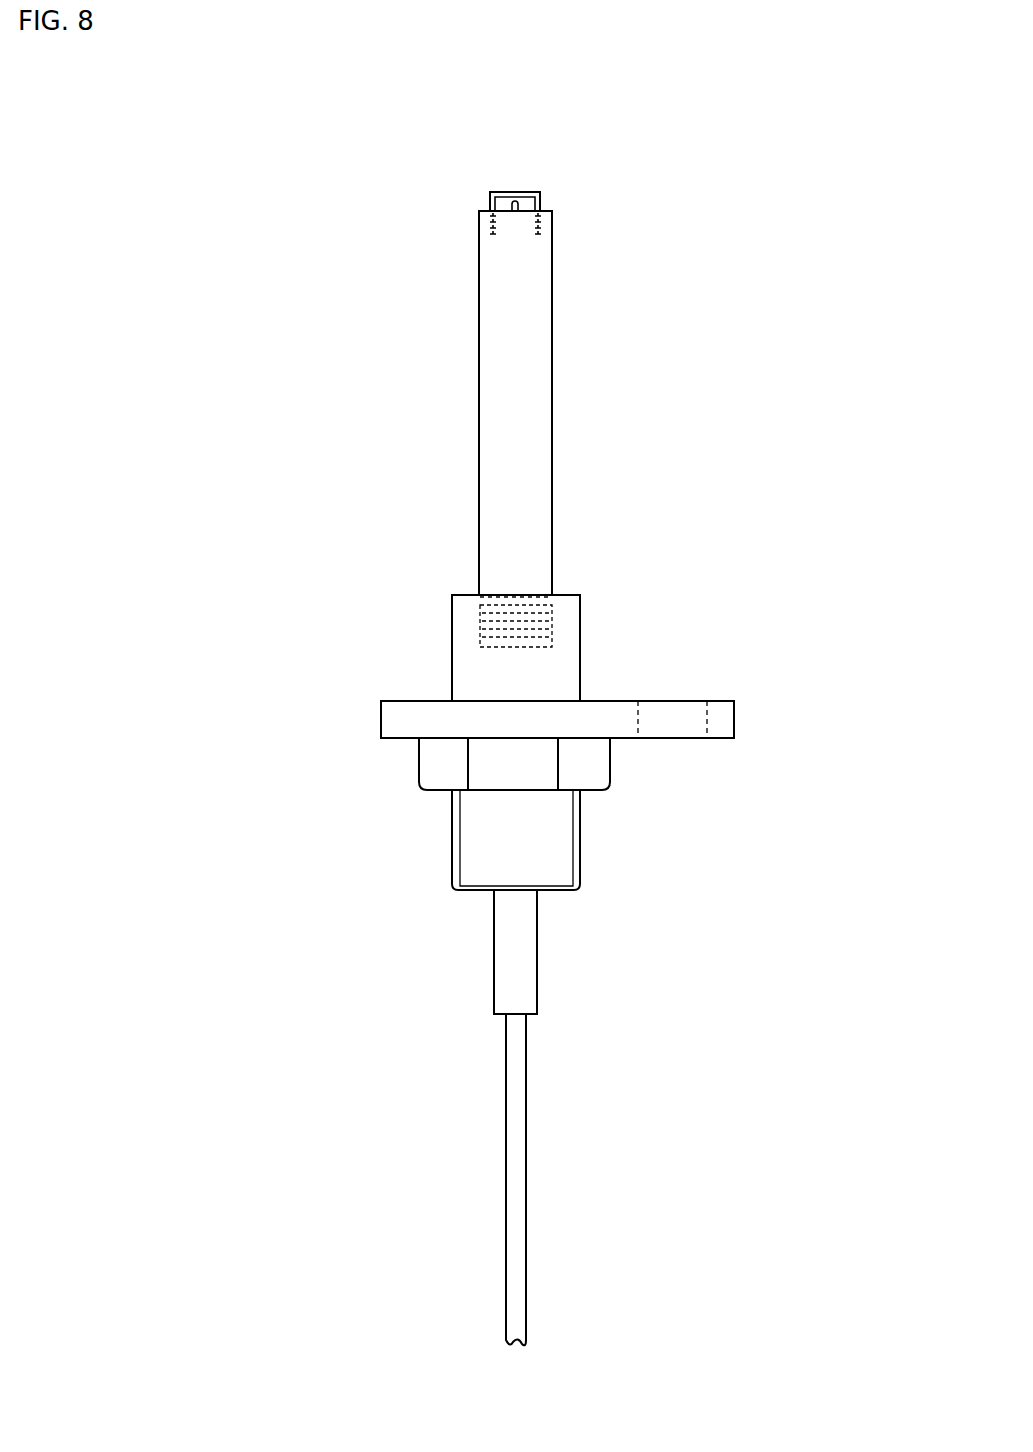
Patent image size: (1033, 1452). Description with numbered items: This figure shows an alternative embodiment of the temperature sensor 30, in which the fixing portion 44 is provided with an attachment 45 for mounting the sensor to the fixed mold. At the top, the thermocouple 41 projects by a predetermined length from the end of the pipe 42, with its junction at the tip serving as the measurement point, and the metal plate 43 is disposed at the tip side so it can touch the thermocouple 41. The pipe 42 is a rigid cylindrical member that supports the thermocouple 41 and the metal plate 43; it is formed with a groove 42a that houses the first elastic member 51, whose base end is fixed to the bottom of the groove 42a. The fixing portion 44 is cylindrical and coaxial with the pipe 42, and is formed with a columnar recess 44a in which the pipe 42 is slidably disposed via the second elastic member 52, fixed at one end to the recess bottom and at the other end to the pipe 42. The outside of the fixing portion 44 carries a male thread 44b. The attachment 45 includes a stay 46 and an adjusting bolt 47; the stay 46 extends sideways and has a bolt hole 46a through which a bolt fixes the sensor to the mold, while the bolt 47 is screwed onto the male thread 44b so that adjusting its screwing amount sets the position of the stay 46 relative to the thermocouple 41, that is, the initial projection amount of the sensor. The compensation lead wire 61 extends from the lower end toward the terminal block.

The temperature sensor 30 is at (701, 154).
The thermocouple 41 is at (512, 196).
The pipe 42 is at (479, 368).
The groove 42a is at (479, 222).
The metal plate 43 is at (525, 194).
The fixing portion 44 is at (452, 632).
The recess 44a is at (490, 590).
The male thread 44b is at (448, 835).
The attachment 45 is at (599, 732).
The stay 46 is at (735, 720).
The bolt hole 46a is at (712, 696).
The adjusting bolt 47 is at (612, 765).
The first elastic member 51 is at (554, 224).
The second elastic member 52 is at (552, 620).
The compensation lead wire 61 is at (506, 1137).